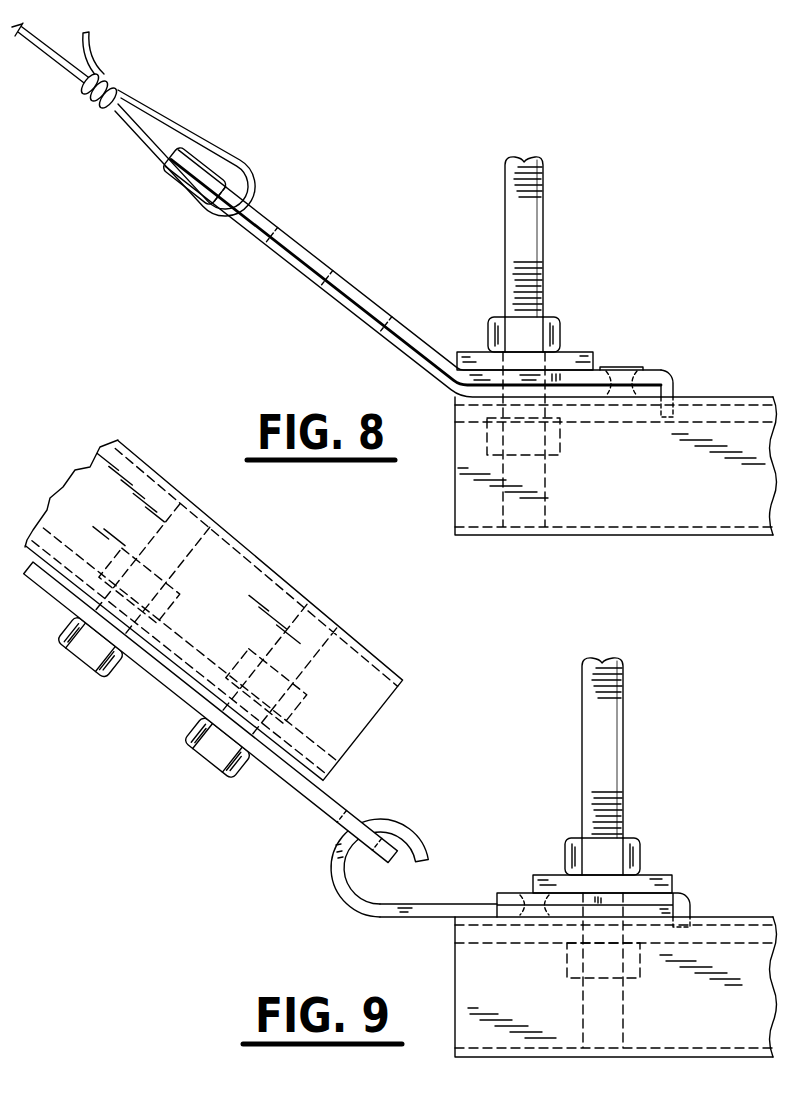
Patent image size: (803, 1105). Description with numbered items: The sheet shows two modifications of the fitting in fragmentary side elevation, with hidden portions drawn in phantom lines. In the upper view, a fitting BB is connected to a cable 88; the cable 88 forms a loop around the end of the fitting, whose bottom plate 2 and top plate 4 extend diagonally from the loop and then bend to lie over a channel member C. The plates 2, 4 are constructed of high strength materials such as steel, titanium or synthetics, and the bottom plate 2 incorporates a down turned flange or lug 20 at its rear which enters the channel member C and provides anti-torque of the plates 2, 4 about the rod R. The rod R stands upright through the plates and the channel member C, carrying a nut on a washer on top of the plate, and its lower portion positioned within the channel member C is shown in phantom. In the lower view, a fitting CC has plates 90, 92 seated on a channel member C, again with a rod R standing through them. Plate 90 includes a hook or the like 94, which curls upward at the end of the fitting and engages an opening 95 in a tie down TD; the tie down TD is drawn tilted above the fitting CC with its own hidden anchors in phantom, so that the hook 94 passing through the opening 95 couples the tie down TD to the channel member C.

In FIG. 8, the cable 88 is at (173, 117).
In FIG. 8, the bottom plate 2 is at (291, 294).
In FIG. 8, the top plate 4 is at (324, 240).
In FIG. 8, the down turned flange or lug 20 is at (675, 412).
In FIG. 8, the fitting BB is at (455, 286).
In FIG. 8, the rod R is at (560, 222).
In FIG. 9, the rod R is at (640, 730).
In FIG. 8, the channel member C is at (661, 485).
In FIG. 9, the channel member C is at (694, 1017).
In FIG. 9, the tie down TD is at (151, 692).
In FIG. 9, the hook 94 is at (403, 822).
In FIG. 9, the opening 95 is at (345, 830).
In FIG. 9, the plate 90 is at (418, 918).
In FIG. 9, the plate 92 is at (665, 880).
In FIG. 9, the fitting CC is at (543, 792).